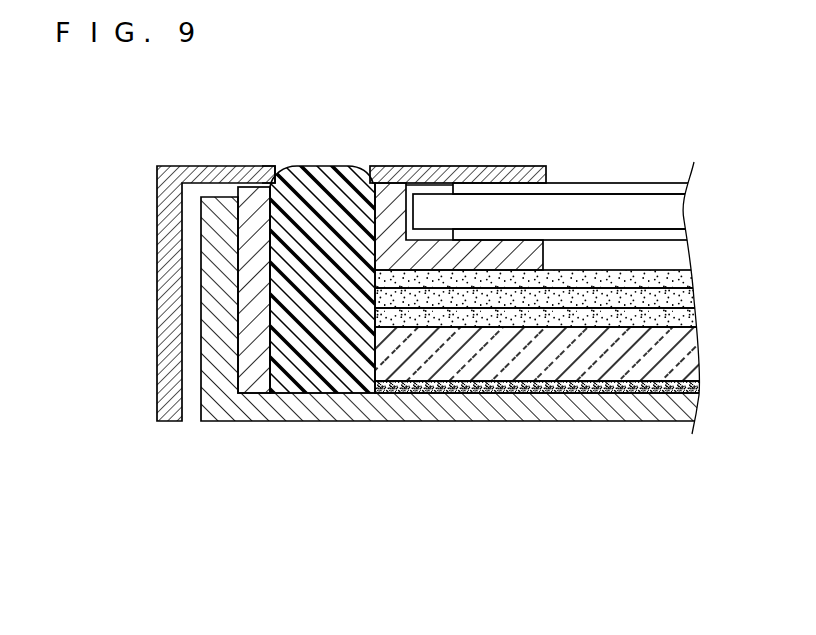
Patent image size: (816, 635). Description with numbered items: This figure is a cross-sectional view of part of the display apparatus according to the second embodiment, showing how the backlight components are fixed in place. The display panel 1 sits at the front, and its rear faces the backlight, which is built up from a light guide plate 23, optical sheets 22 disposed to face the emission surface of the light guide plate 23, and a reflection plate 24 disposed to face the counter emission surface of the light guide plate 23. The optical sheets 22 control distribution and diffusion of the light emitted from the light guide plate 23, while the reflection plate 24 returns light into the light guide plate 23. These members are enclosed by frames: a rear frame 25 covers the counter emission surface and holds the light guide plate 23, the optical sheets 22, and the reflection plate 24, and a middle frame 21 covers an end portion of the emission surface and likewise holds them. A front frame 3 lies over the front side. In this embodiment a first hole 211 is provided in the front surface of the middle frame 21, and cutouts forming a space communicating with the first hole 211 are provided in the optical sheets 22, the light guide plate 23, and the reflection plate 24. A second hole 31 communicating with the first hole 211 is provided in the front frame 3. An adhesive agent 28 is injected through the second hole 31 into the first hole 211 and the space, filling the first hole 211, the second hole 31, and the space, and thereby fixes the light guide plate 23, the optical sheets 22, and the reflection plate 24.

The display panel 1 is at (683, 213).
The front frame 3 is at (191, 166).
The middle frame 21 is at (247, 200).
The first hole 211 is at (270, 222).
The optical sheets 22 is at (707, 270).
The light guide plate 23 is at (696, 353).
The reflection plate 24 is at (699, 386).
The rear frame 25 is at (697, 405).
The adhesive agent 28 is at (349, 180).
The second hole 31 is at (282, 166).